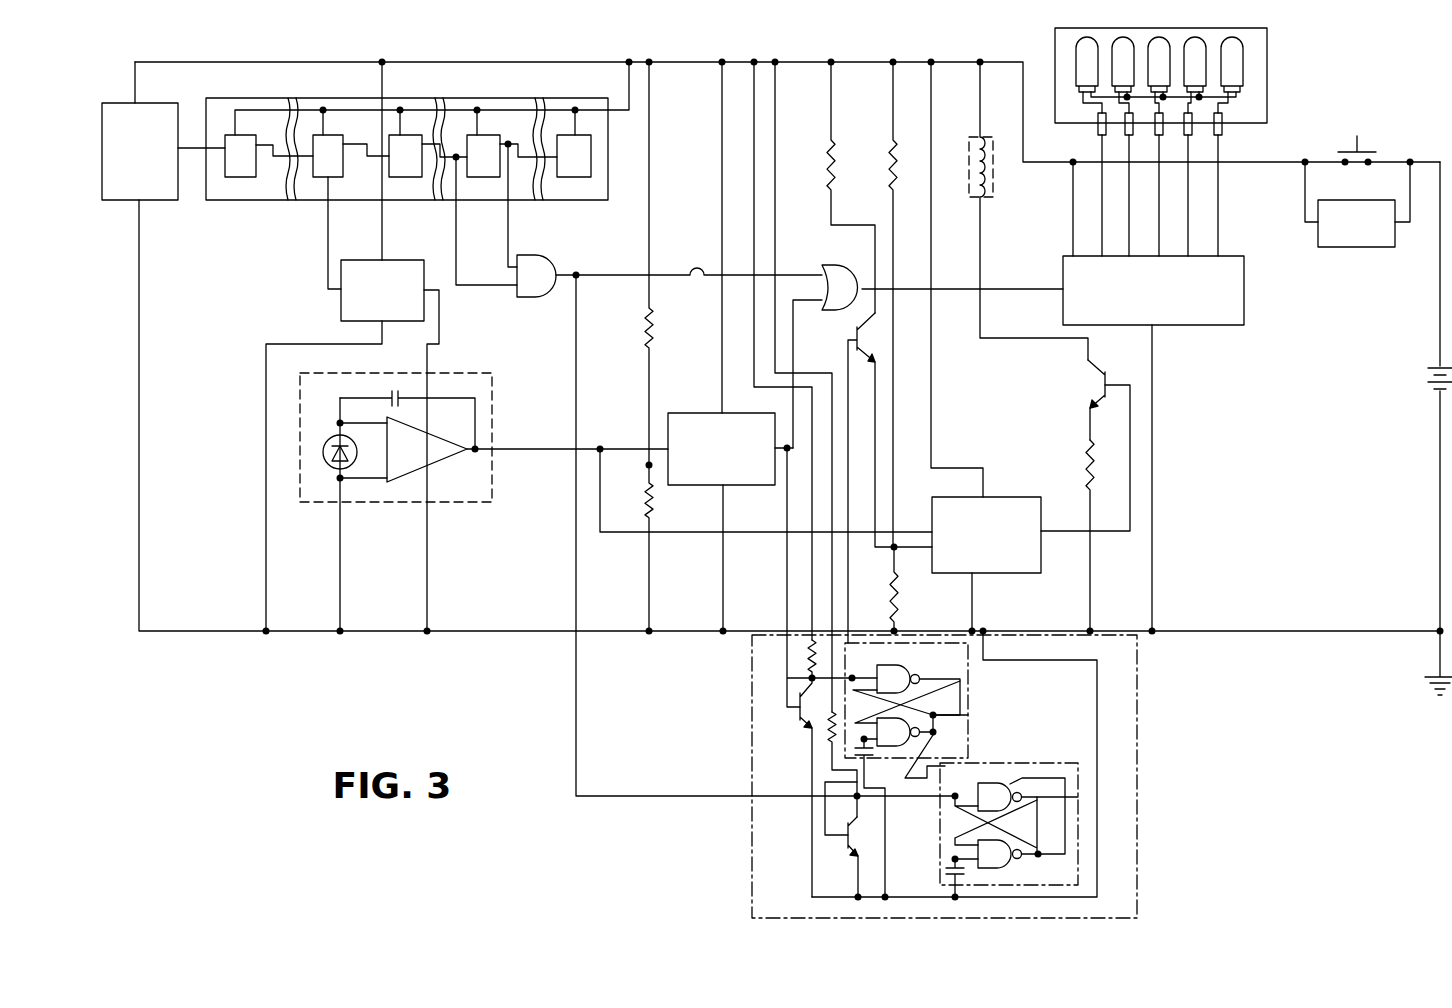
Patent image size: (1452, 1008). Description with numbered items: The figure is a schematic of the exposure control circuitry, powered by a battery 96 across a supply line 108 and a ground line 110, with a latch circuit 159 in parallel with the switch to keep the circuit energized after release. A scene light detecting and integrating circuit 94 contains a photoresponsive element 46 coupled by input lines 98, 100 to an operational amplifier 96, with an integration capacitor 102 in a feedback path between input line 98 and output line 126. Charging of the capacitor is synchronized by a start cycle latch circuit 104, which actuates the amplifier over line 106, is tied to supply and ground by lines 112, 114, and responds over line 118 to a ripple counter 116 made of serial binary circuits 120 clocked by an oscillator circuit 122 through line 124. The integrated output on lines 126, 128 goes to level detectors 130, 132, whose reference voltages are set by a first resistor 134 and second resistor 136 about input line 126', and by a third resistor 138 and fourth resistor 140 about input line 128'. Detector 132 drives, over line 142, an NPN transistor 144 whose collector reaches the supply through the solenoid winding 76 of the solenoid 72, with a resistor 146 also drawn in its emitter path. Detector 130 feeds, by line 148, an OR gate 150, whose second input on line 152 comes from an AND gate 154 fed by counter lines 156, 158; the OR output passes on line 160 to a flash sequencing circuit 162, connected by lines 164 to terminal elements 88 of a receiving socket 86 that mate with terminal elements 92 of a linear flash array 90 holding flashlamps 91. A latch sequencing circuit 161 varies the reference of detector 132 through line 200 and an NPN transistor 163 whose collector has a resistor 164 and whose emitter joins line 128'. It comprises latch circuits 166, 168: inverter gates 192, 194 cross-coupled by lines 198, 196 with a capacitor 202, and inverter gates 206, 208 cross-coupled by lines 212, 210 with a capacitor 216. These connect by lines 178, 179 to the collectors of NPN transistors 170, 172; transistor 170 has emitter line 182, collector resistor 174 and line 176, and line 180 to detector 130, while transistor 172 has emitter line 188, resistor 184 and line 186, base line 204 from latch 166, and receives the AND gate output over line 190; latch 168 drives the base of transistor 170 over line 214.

The photoresponsive element 46 is at (325, 462).
The solenoid 72 is at (975, 137).
The solenoid winding 76 is at (985, 170).
The flash array receiving socket 86 is at (1250, 123).
The terminal elements 88 is at (1195, 138).
The linear flash array 90 is at (1268, 64).
The flashlamps 91 is at (1206, 45).
The terminal elements 92 is at (1192, 118).
The scene light detecting and integrating circuit 94 is at (492, 406).
The operational amplifier 96 is at (436, 482).
The input line 98 is at (340, 424).
The input line 100 is at (346, 490).
The integration capacitor 102 is at (395, 390).
The start cycle latch circuit 104 is at (341, 306).
The interconnecting line 106 is at (440, 326).
The supply line 108 is at (805, 62).
The ground line 110 is at (468, 631).
The line 112 is at (384, 228).
The line 114 is at (266, 464).
The ripple counter 116 is at (494, 98).
The interconnecting line 118 is at (326, 220).
The binary circuits 120 is at (320, 135).
The oscillator circuit 122 is at (157, 200).
The line 124 is at (196, 148).
The output line 126 is at (567, 467).
The input line 126' is at (627, 433).
The interconnecting line 128 is at (766, 508).
The input line 128' is at (944, 574).
The level detector circuit 130 is at (700, 413).
The level detector circuit 132 is at (1006, 576).
The first resistor 134 is at (644, 322).
The second resistor 136 is at (647, 500).
The third resistor 138 is at (888, 158).
The fourth resistor 140 is at (906, 590).
The interconnecting line 142 is at (1134, 436).
The NPN transistor 144 is at (1103, 380).
The resistor 146 is at (1084, 452).
The line 148 is at (794, 360).
The OR gate 150 is at (828, 266).
The interconnecting line 152 is at (697, 268).
The AND gate 154 is at (553, 265).
The line 156 is at (508, 238).
The line 158 is at (486, 292).
The latch circuit 159 is at (1352, 247).
The interconnecting line 160 is at (947, 288).
The latch sequencing circuit 161 is at (1140, 722).
The flash sequencing circuit 162 is at (1212, 325).
The NPN transistor 163 is at (852, 334).
The resistor / lines 164 is at (827, 152).
The latch circuit 166 is at (968, 707).
The latch circuit 168 is at (1078, 866).
The NPN transistor 170 is at (798, 698).
The NPN transistor 172 is at (845, 838).
The resistor 174 is at (784, 640).
The interconnecting line 176 is at (810, 566).
The line 178 is at (855, 668).
The line 179 is at (907, 800).
The interconnecting line 180 is at (785, 655).
The line 182 is at (823, 810).
The interconnecting resistor 184 is at (828, 730).
The line 186 is at (834, 490).
The interconnecting line 188 is at (856, 868).
The interconnecting line 190 is at (640, 796).
The inverter gate 192 is at (982, 649).
The inverter gate 194 is at (938, 742).
The line 196 is at (968, 712).
The interconnecting line 198 is at (962, 690).
The line 200 is at (846, 586).
The capacitor 202 is at (855, 752).
The interconnecting line 204 is at (810, 800).
The inverter gate 206 is at (1066, 778).
The inverter gate 208 is at (1012, 868).
The interconnecting line 210 is at (1040, 834).
The interconnecting line 212 is at (1040, 808).
The line 214 is at (1078, 797).
The capacitor 216 is at (962, 882).